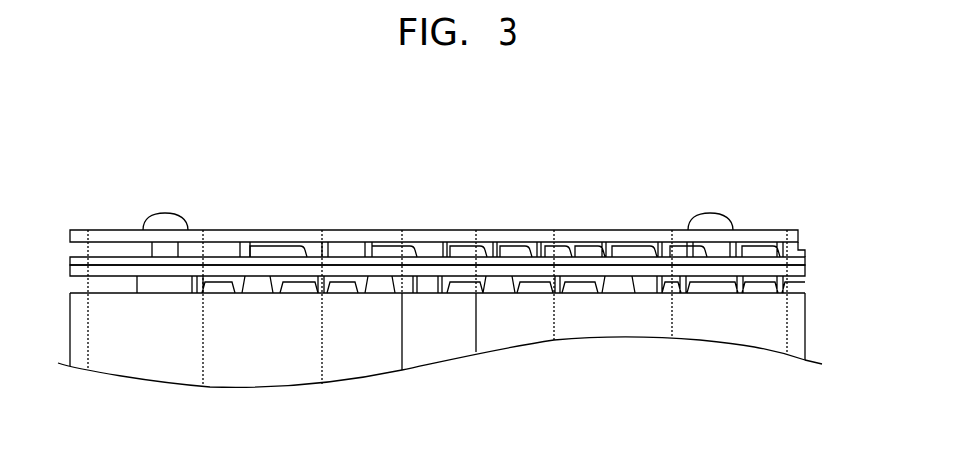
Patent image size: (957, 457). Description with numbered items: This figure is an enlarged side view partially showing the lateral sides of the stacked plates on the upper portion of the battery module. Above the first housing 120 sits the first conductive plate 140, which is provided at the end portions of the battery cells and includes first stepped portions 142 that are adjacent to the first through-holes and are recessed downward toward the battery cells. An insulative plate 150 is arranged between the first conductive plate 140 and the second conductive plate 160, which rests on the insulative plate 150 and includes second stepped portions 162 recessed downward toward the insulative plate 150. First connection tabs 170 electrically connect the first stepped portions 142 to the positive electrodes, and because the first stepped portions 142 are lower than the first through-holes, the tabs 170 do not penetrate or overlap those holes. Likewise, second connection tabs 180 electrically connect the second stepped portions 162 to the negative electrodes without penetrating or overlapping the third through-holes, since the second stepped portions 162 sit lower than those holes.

The first housing 120 is at (773, 320).
The first conductive plate 140 is at (803, 272).
The first stepped portions 142 is at (578, 285).
The insulative plate 150 is at (803, 262).
The second conductive plate 160 is at (800, 235).
The second stepped portions 162 is at (500, 245).
The first connection tabs 170 is at (312, 283).
The second connection tabs 180 is at (310, 243).